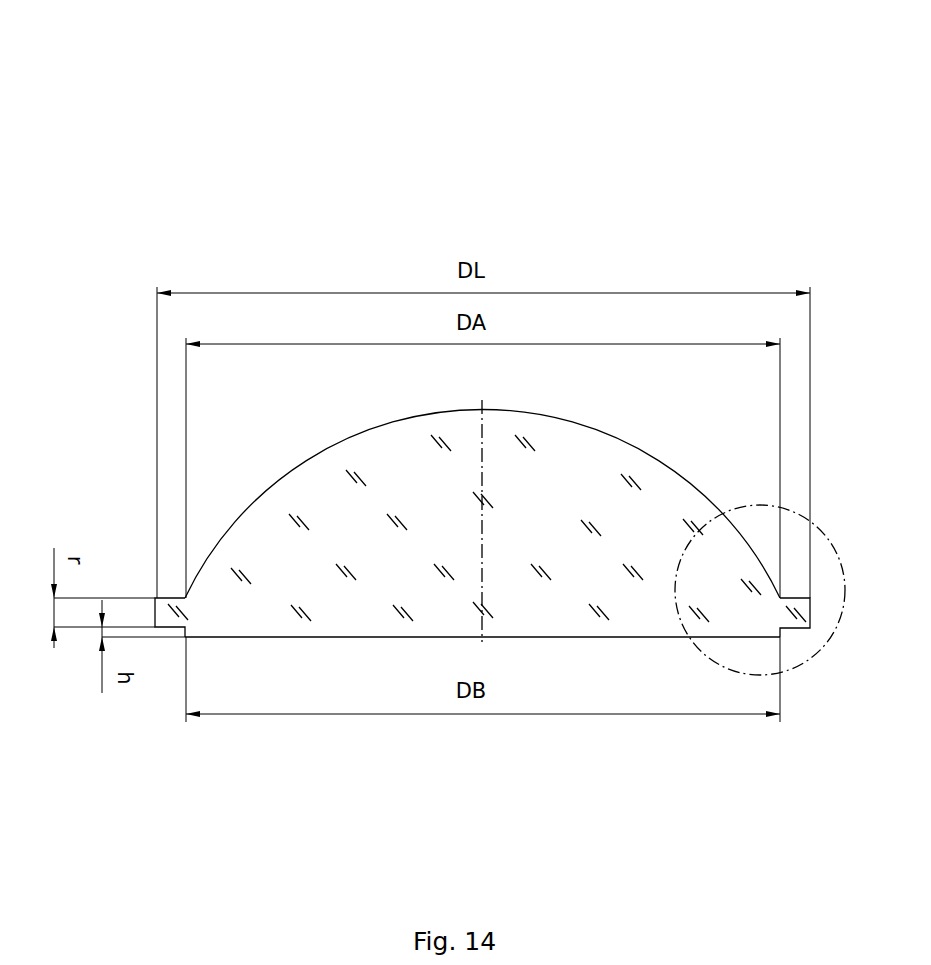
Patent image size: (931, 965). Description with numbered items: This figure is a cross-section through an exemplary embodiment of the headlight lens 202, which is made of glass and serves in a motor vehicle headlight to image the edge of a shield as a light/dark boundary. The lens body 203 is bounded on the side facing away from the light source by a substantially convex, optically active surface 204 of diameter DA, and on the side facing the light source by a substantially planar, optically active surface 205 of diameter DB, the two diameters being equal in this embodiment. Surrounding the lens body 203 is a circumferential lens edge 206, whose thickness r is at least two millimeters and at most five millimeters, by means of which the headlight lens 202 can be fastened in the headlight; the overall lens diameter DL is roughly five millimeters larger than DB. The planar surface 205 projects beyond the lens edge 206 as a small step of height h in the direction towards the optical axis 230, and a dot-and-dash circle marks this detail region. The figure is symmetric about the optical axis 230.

The headlight lens 202 is at (447, 427).
The lens body 203 is at (256, 550).
The convex surface 204 is at (293, 468).
The planar surface 205 is at (298, 632).
The lens edge 206 is at (172, 607).
The optical axis 230 is at (478, 535).